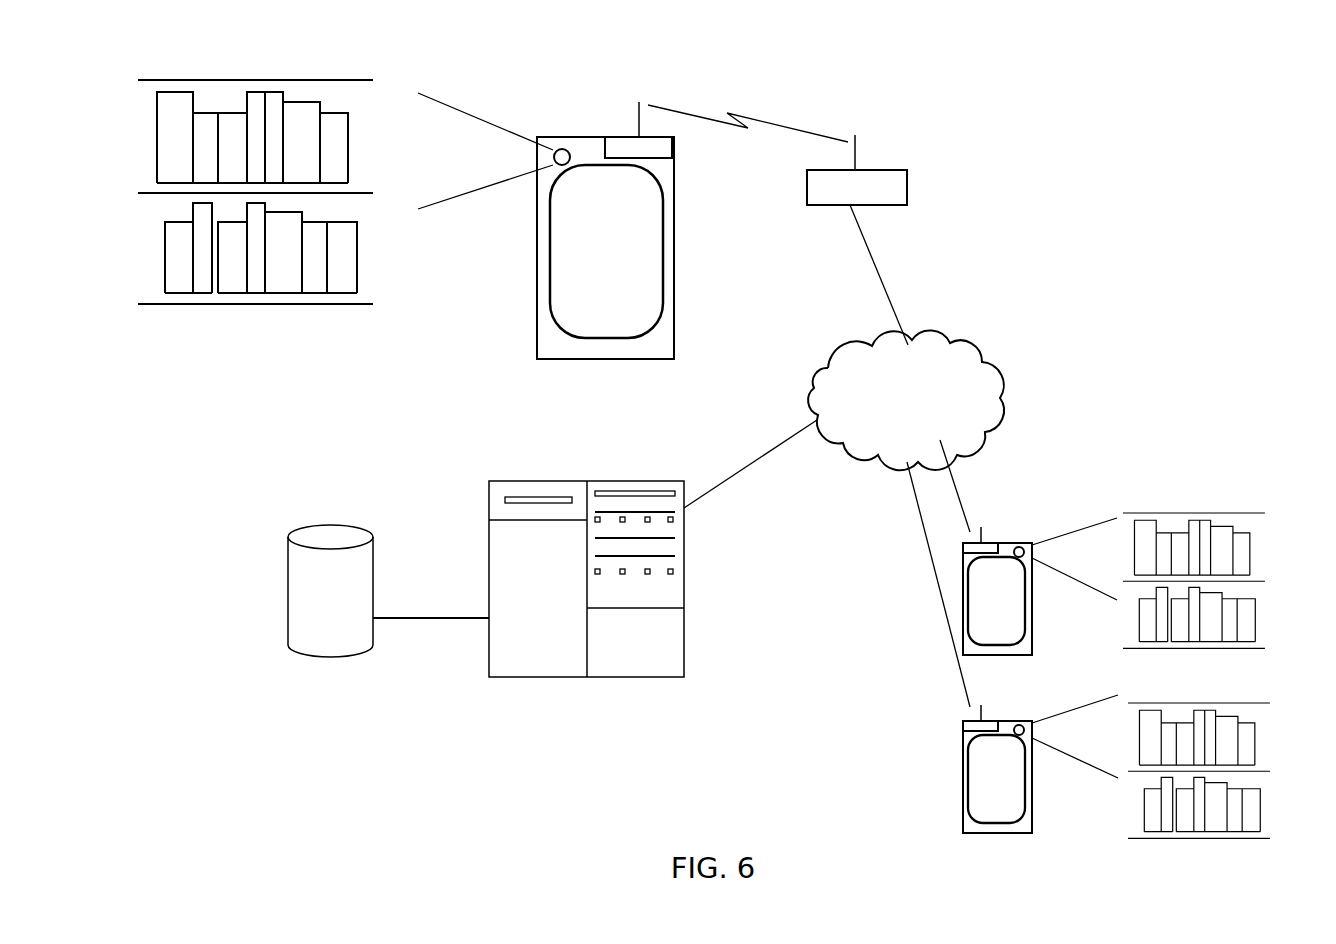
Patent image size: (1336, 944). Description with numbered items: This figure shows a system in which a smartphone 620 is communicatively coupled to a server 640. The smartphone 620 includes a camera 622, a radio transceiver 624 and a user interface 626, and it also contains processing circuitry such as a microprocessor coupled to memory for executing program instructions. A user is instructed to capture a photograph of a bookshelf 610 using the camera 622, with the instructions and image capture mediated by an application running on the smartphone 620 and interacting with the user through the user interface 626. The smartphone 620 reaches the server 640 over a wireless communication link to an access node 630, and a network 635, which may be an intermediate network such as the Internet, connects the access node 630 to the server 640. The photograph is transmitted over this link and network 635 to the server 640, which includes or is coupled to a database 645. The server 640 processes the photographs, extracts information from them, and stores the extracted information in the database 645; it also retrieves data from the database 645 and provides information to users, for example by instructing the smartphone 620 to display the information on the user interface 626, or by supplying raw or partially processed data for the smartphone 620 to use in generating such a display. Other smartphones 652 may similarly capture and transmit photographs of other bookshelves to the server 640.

The bookshelf 610 is at (290, 75).
The smartphone 620 is at (537, 260).
The camera 622 is at (557, 137).
The radio transceiver 624 is at (625, 135).
The user interface 626 is at (663, 260).
The access node 630 is at (890, 170).
The network 635 is at (960, 335).
The server 640 is at (575, 481).
The database 645 is at (330, 526).
The other smartphones 652 is at (1010, 540).